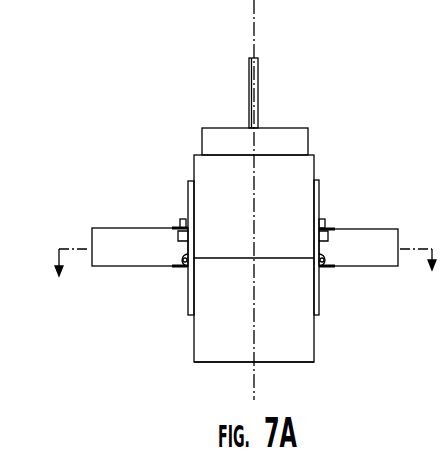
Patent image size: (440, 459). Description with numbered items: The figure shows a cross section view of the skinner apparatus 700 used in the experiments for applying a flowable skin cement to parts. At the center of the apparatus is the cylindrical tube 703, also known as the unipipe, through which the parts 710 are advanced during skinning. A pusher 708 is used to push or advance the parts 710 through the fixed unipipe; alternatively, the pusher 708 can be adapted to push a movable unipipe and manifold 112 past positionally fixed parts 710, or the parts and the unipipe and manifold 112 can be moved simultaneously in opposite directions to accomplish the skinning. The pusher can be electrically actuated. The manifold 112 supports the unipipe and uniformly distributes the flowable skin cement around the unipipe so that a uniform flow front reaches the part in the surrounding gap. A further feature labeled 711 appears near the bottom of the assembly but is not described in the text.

The skinner apparatus 700 is at (185, 58).
The pusher 708 is at (265, 145).
The cylindrical tube 703 is at (320, 197).
The manifold 112 is at (353, 229).
The parts 710 is at (303, 339).
The bottom edge 711 is at (252, 372).